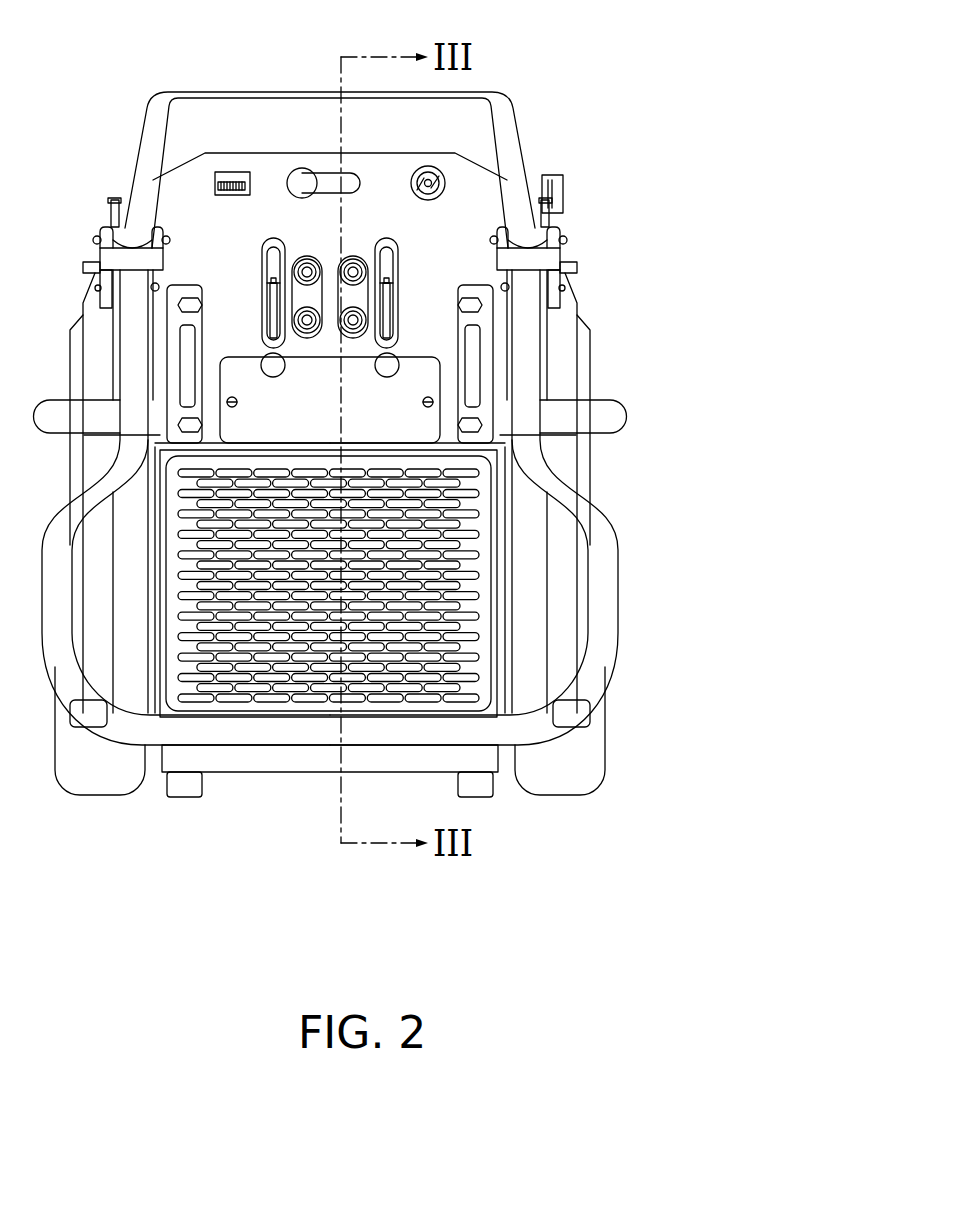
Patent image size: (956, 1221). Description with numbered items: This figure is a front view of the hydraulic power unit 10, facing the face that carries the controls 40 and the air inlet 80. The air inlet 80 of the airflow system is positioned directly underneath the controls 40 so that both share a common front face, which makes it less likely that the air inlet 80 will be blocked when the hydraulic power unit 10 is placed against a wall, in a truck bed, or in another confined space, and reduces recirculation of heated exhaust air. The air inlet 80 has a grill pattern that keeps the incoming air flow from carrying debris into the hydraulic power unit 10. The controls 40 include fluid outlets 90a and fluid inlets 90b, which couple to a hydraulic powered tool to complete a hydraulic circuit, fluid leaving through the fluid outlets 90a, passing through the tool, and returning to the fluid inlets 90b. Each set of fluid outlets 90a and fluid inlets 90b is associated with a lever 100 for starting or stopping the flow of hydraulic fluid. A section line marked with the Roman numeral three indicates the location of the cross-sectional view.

The hydraulic power unit 10 is at (646, 69).
The controls 40 is at (422, 240).
The air inlet 80 is at (483, 525).
The fluid outlets 90a is at (307, 334).
The fluid inlets 90b is at (302, 262).
The lever 100 is at (268, 368).